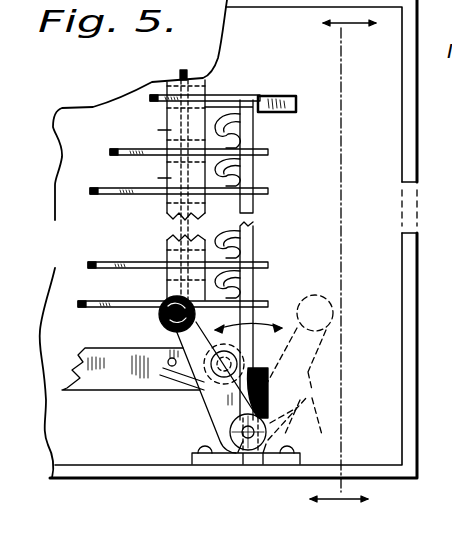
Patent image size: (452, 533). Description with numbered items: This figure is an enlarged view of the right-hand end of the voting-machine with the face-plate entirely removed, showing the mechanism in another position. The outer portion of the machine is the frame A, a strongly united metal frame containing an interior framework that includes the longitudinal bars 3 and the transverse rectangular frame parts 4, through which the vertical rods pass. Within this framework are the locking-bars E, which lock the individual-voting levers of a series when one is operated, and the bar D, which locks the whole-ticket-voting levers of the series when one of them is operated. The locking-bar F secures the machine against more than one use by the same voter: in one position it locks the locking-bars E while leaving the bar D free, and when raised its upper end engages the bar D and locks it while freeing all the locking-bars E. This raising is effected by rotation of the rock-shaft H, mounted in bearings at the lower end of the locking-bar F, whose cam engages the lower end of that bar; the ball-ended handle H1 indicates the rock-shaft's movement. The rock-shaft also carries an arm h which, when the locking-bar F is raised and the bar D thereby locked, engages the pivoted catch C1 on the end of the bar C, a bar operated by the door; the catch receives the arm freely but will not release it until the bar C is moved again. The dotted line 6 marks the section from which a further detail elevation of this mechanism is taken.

The frame A is at (417, 120).
The bar operated by the door C is at (141, 392).
The pivoted catch C1 is at (232, 350).
The bar for locking the whole-ticket-voting levers D is at (268, 98).
The locking-bars E is at (114, 149).
The locking-bar F is at (253, 173).
The rock-shaft H is at (230, 432).
The lever ball end H1 is at (160, 320).
The arm h is at (283, 394).
The longitudinal bars 3 is at (152, 98).
The transverse rectangular frame parts 4 is at (158, 154).
The dotted line 6 6 is at (343, 264).